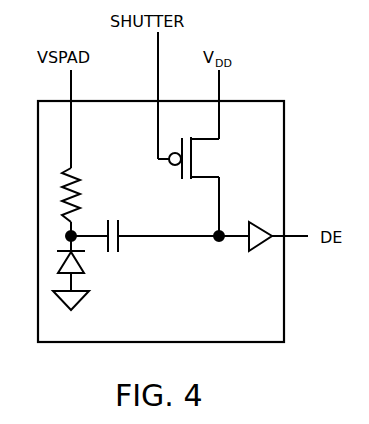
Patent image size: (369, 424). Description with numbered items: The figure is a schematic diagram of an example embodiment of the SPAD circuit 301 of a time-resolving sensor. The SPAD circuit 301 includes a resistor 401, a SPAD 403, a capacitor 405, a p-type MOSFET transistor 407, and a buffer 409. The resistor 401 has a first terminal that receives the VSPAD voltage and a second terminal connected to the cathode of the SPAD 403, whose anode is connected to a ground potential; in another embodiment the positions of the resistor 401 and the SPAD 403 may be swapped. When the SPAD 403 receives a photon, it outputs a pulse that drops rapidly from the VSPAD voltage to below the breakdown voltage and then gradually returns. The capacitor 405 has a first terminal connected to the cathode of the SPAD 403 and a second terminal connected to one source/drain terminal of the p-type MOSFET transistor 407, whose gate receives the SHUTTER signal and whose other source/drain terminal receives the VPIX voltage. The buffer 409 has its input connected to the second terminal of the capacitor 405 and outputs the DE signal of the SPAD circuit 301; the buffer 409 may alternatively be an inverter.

The SPAD circuit 301 is at (62, 343).
The resistor 401 is at (90, 195).
The SPAD 403 is at (88, 273).
The capacitor 405 is at (131, 228).
The p-type MOSFET transistor 407 is at (200, 158).
The buffer 409 is at (249, 252).